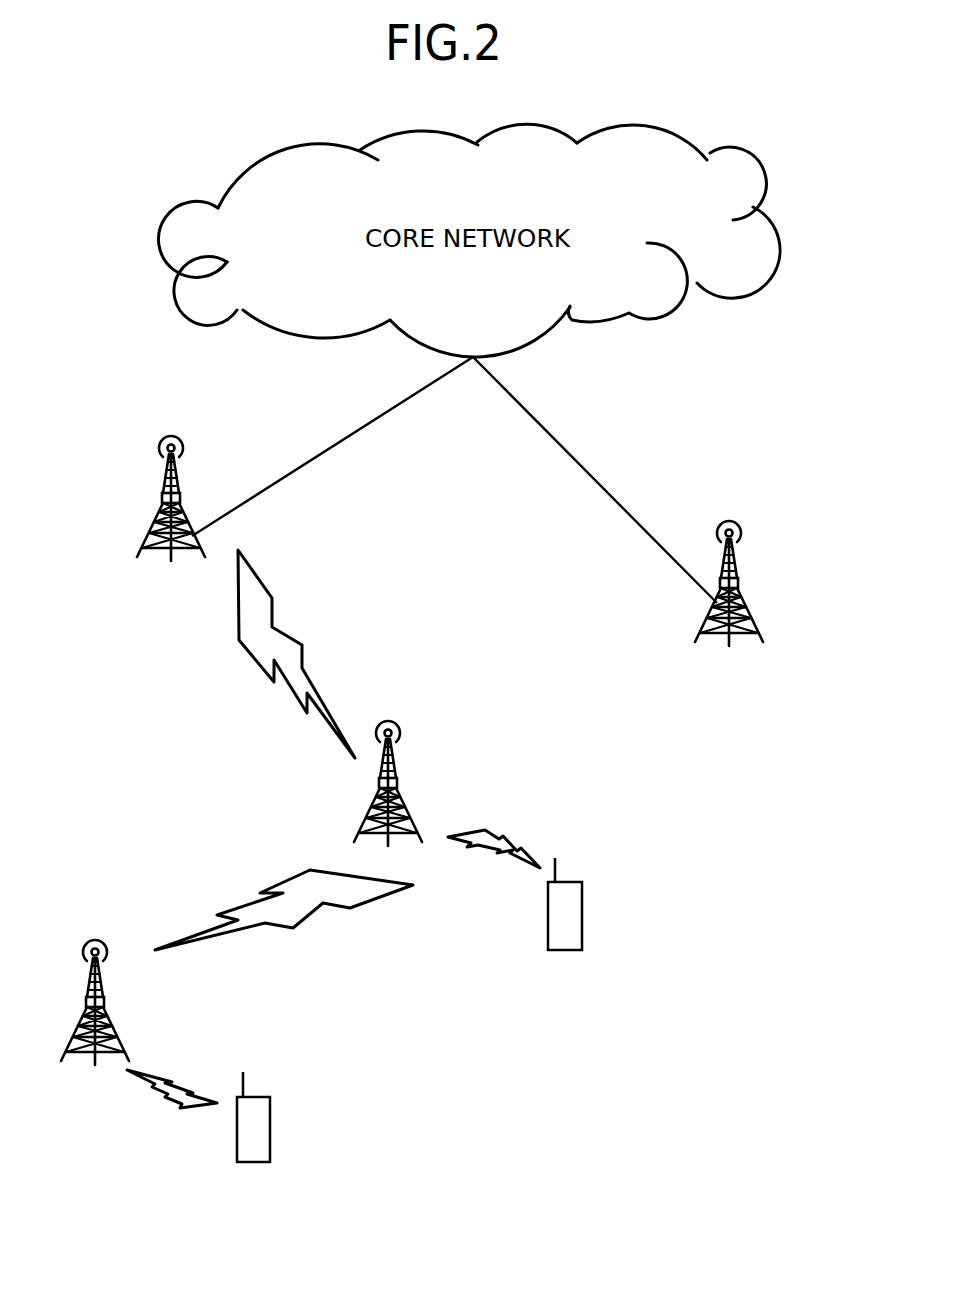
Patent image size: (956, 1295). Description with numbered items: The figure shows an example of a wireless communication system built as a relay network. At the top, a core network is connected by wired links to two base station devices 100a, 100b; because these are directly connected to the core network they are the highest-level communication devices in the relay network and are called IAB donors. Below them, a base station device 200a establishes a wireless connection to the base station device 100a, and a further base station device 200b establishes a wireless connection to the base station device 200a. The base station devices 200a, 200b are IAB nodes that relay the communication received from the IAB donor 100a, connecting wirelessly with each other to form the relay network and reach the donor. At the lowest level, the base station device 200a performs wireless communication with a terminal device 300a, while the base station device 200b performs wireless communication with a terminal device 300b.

The base station device 100a is at (195, 498).
The base station device 100b is at (752, 583).
The base station device 200a is at (412, 783).
The base station device 200b is at (122, 1002).
The terminal device 300a is at (601, 904).
The terminal device 300b is at (291, 1117).